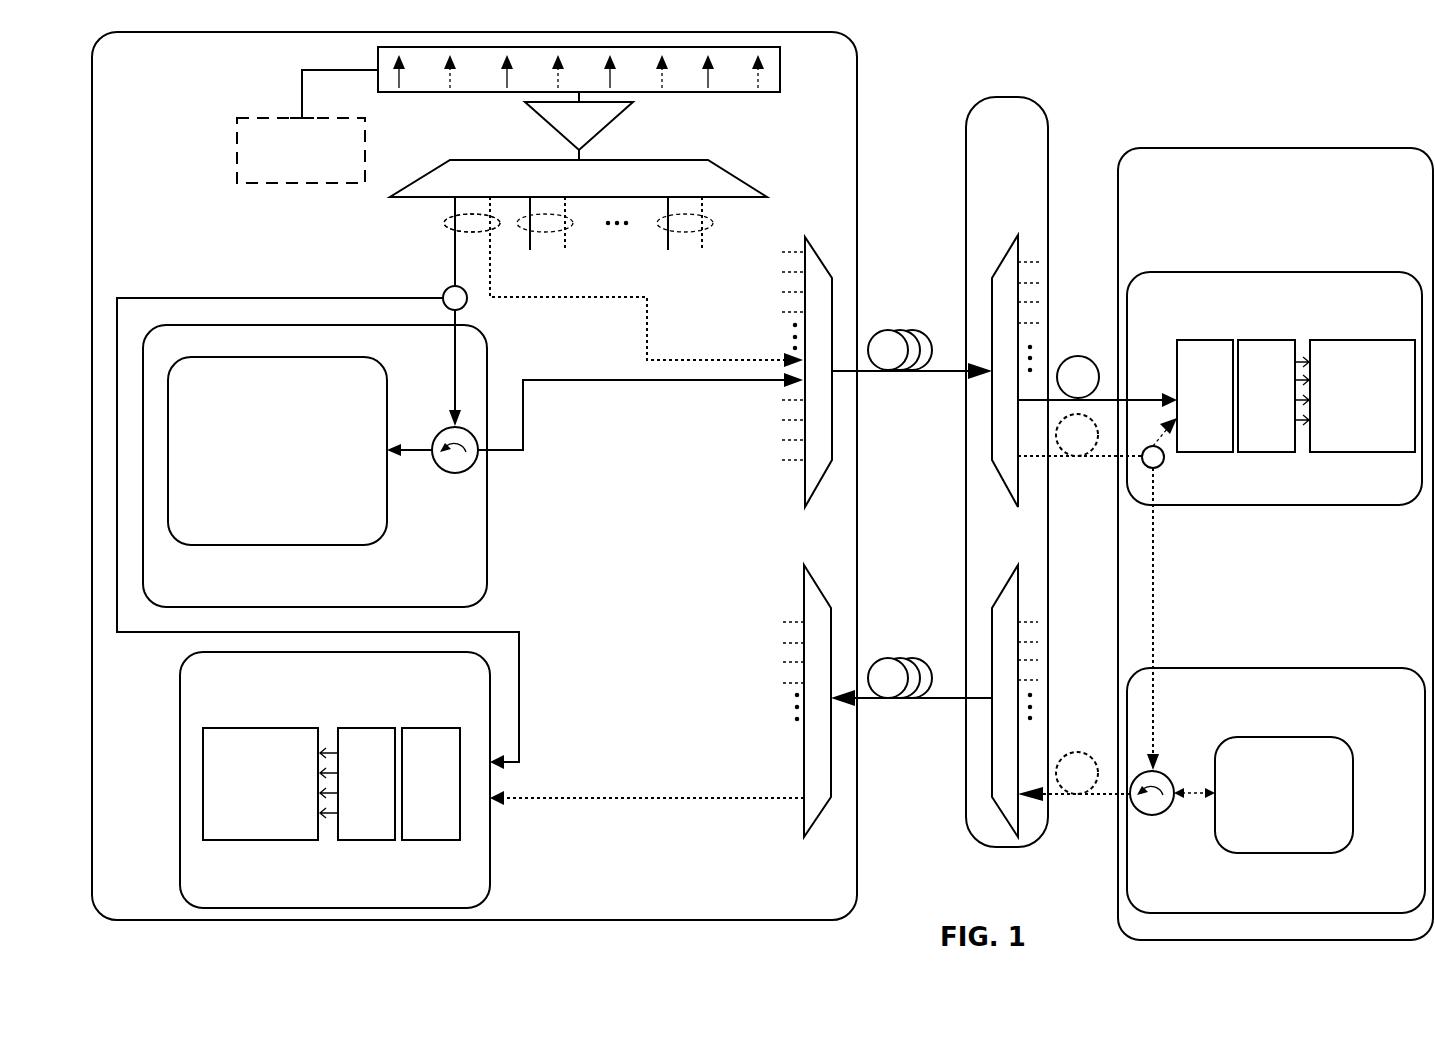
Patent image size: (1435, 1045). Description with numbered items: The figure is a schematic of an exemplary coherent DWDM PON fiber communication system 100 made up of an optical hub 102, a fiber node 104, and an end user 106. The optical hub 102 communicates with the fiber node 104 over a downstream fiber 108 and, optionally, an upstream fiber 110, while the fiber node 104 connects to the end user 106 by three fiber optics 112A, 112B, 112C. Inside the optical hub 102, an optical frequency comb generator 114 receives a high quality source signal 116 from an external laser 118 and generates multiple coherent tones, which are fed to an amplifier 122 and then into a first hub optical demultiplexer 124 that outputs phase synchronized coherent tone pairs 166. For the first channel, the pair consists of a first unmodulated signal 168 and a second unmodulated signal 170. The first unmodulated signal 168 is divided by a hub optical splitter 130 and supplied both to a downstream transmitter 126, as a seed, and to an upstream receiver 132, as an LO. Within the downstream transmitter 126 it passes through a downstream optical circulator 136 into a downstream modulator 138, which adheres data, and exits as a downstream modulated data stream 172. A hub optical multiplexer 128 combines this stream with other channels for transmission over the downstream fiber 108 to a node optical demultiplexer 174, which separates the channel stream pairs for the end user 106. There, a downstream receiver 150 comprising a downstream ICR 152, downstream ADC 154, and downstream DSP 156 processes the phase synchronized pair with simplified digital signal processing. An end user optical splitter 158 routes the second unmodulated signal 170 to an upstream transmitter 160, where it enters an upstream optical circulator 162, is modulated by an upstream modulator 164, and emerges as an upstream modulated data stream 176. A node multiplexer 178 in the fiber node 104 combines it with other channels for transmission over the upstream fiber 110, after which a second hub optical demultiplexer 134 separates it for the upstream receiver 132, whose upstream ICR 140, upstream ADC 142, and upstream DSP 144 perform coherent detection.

The fiber communication system 100 is at (1352, 84).
The optical hub 102 is at (137, 66).
The fiber node 104 is at (993, 86).
The end user 106 is at (1297, 179).
The downstream fiber 108 is at (912, 314).
The upstream fiber 110 is at (912, 634).
The fiber optics 112A is at (1075, 346).
The fiber optics 112B is at (1071, 474).
The fiber optics 112C is at (1067, 806).
The optical frequency comb generator 114 is at (780, 70).
The high quality source signal 116 is at (300, 86).
The external laser 118 is at (317, 160).
The amplifier 122 is at (595, 130).
The first hub optical demultiplexer 124 is at (735, 176).
The downstream transmitter 126 is at (417, 596).
The hub optical multiplexer 128 is at (805, 490).
The hub optical splitter 130 is at (467, 300).
The upstream receiver 132 is at (419, 899).
The second hub optical demultiplexer 134 is at (804, 823).
The downstream optical circulator 136 is at (443, 474).
The downstream modulator 138 is at (260, 506).
The upstream integrated coherent receiver 140 is at (415, 794).
The upstream analog to digital converter 142 is at (351, 794).
The upstream digital signal processor 144 is at (246, 794).
The downstream receiver 150 is at (1377, 304).
The downstream integrated coherent receiver 152 is at (1189, 406).
The downstream analog to digital converter 154 is at (1250, 406).
The downstream digital signal processor 156 is at (1346, 406).
The end user optical splitter 158 is at (1164, 460).
The upstream transmitter 160 is at (1363, 701).
The upstream optical circulator 162 is at (1157, 815).
The upstream modulator 164 is at (1264, 839).
The phase synchronized coherent tone pair 166 is at (430, 223).
The first unmodulated signal 168 is at (455, 266).
The second unmodulated signal 170 is at (647, 323).
The downstream modulated data stream 172 is at (643, 382).
The node optical demultiplexer 174 is at (1000, 264).
The upstream modulated data stream 176 is at (628, 798).
The node multiplexer 178 is at (1003, 817).